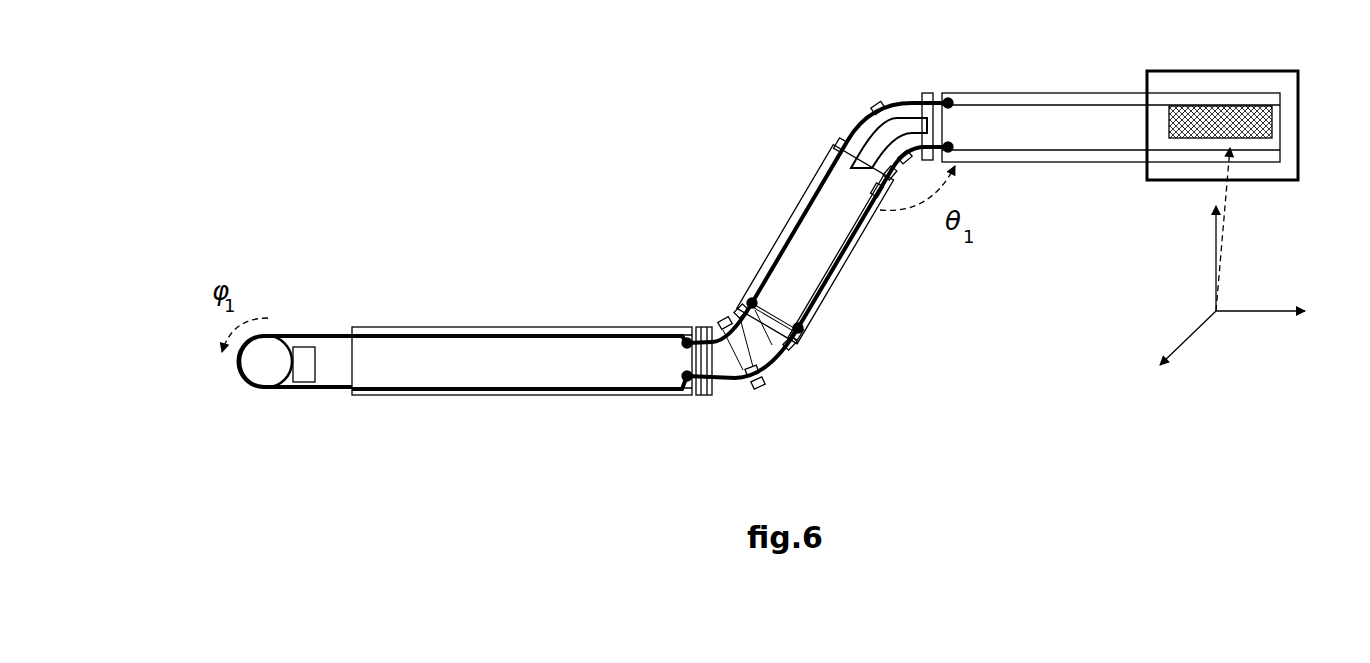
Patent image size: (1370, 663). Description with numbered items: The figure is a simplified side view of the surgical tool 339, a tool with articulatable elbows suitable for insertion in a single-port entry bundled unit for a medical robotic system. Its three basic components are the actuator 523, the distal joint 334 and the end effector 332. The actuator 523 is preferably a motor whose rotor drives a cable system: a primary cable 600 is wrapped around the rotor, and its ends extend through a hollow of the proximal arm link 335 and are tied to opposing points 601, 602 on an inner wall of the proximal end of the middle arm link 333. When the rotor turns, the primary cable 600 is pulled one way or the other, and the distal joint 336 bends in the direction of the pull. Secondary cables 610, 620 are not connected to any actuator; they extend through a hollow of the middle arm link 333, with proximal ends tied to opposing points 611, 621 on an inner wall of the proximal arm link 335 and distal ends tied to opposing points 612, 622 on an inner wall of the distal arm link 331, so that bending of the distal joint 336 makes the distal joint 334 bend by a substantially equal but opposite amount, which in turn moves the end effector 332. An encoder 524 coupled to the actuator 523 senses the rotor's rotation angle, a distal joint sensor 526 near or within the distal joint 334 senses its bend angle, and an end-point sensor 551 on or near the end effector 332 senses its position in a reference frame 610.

The distal arm link 331 is at (1045, 110).
The end effector 332 is at (1240, 75).
The middle arm link 333 is at (838, 288).
The distal joint 334 is at (899, 78).
The proximal arm link 335 is at (489, 356).
The distal joint 336 is at (790, 389).
The surgical tool 339 is at (692, 192).
The actuator 523 is at (273, 342).
The encoder 524 is at (308, 374).
The distal joint sensor 526 is at (874, 140).
The end-point sensor 551 is at (1195, 118).
The primary cable 600 is at (579, 330).
The opposing point 601 is at (743, 296).
The opposing point 602 is at (808, 334).
The secondary cable 610 is at (806, 209).
The opposing point 611 is at (683, 337).
The opposing point 612 is at (951, 94).
The secondary cable 620 is at (845, 244).
The opposing point 621 is at (684, 385).
The opposing point 622 is at (957, 138).